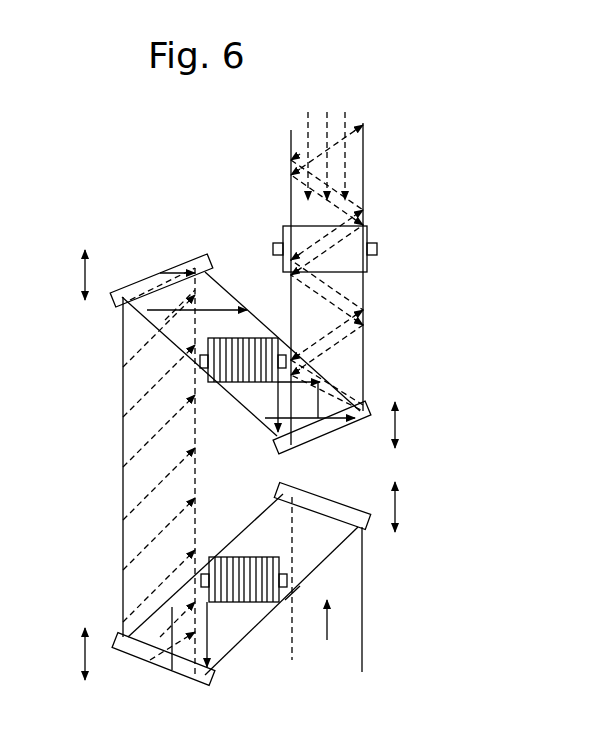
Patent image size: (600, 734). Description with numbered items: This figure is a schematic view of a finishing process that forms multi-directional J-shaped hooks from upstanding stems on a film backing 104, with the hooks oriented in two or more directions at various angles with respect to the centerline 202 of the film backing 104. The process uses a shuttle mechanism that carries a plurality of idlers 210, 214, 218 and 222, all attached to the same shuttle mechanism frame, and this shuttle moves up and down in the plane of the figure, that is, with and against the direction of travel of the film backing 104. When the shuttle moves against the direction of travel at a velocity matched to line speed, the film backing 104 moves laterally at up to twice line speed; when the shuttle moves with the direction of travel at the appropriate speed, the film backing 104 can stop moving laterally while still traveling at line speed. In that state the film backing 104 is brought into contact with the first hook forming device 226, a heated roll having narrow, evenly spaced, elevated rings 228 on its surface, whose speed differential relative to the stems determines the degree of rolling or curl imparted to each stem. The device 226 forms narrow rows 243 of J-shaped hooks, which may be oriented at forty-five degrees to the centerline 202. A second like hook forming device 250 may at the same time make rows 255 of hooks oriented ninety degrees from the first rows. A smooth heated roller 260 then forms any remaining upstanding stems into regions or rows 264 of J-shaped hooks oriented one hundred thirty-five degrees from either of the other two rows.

The film backing 104 is at (345, 596).
The centerline 202 is at (327, 640).
The idler 210 is at (277, 484).
The idler 214 is at (114, 648).
The idler 218 is at (112, 292).
The idler 222 is at (368, 422).
The first hook forming device 226 is at (214, 557).
The elevated rings 228 is at (247, 588).
The rows of J-shaped hooks 243 is at (127, 536).
The second hook forming device 250 is at (210, 384).
The rows of J-shaped hooks 255 is at (348, 313).
The smooth heated roller 260 is at (368, 238).
The rows of J-shaped hooks 264 is at (300, 136).